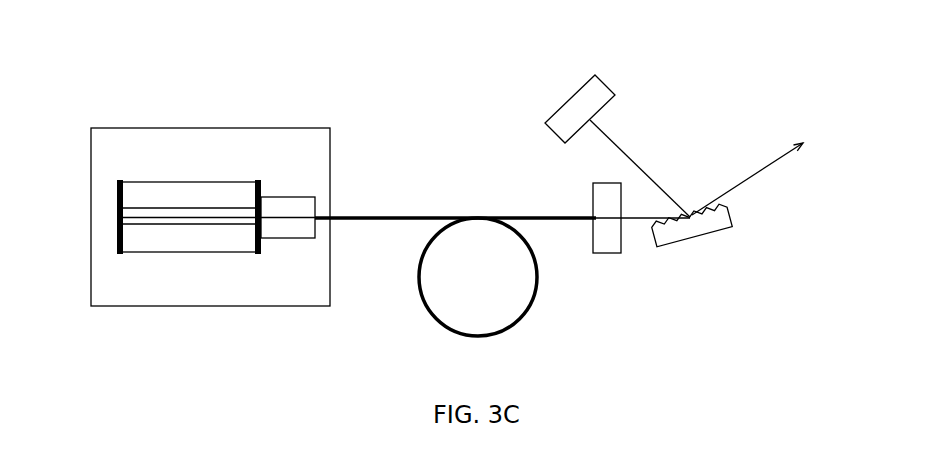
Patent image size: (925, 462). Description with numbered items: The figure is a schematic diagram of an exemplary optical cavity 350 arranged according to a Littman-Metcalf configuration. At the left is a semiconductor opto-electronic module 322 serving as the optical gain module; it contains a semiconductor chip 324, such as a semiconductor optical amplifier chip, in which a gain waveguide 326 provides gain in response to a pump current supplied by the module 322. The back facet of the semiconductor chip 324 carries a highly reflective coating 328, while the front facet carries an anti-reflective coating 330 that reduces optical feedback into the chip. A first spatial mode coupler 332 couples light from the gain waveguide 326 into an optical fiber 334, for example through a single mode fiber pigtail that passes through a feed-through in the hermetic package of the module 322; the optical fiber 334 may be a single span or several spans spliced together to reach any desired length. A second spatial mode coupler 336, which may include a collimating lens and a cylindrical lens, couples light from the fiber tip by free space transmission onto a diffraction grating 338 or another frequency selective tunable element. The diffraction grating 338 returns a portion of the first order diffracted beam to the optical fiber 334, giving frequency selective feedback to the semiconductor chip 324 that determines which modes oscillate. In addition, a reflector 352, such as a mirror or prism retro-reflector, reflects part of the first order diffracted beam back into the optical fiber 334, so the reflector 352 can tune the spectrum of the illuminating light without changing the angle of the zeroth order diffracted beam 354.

The semiconductor opto-electronic module 322 is at (217, 128).
The semiconductor chip 324 is at (162, 182).
The gain waveguide 326 is at (188, 224).
The highly reflective coating 328 is at (117, 197).
The anti-reflective coating 330 is at (263, 188).
The first spatial mode coupler 332 is at (287, 238).
The optical fiber 334 is at (405, 326).
The second spatial mode coupler 336 is at (605, 253).
The diffraction grating 338 is at (695, 237).
The optical cavity 350 is at (451, 76).
The reflector 352 is at (608, 83).
The zeroth order diffracted beam 354 is at (762, 172).